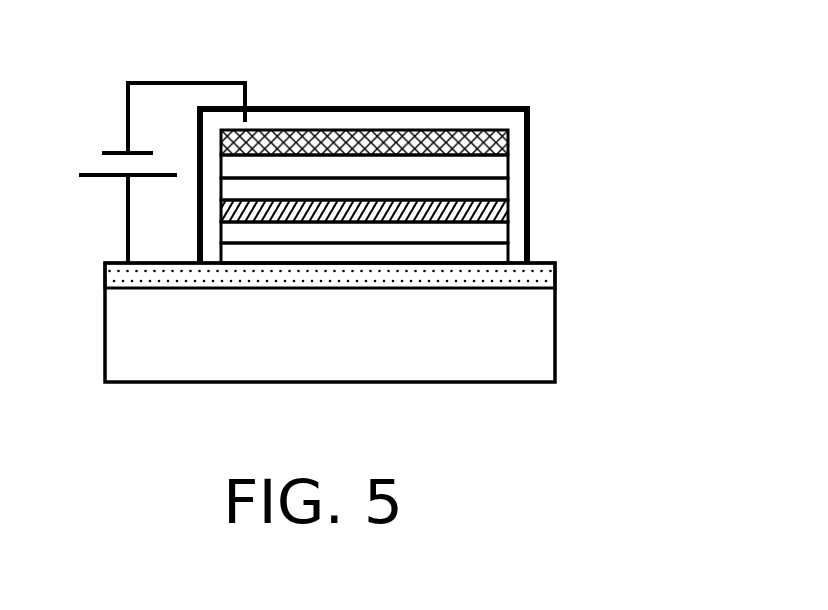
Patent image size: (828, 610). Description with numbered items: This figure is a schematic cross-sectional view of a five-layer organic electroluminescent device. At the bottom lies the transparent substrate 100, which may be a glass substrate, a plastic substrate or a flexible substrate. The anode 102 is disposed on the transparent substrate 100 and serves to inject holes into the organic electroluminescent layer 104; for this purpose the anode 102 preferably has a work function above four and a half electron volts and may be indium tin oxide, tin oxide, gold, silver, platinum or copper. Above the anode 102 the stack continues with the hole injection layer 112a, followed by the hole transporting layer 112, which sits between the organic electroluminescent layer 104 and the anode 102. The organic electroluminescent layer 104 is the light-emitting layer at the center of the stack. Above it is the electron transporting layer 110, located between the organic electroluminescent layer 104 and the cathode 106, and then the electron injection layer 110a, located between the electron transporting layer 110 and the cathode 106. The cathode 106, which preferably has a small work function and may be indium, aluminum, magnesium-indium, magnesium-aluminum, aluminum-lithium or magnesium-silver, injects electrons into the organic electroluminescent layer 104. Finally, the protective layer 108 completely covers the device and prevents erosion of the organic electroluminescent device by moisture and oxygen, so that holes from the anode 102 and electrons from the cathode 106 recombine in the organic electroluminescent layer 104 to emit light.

The transparent substrate 100 is at (512, 357).
The anode 102 is at (537, 277).
The organic electroluminescent layer 104 is at (500, 213).
The cathode 106 is at (508, 143).
The protective layer 108 is at (397, 108).
The electron transporting layer 110 is at (492, 193).
The electron injection layer 110a is at (497, 168).
The hole transporting layer 112 is at (495, 232).
The hole injection layer 112a is at (497, 252).